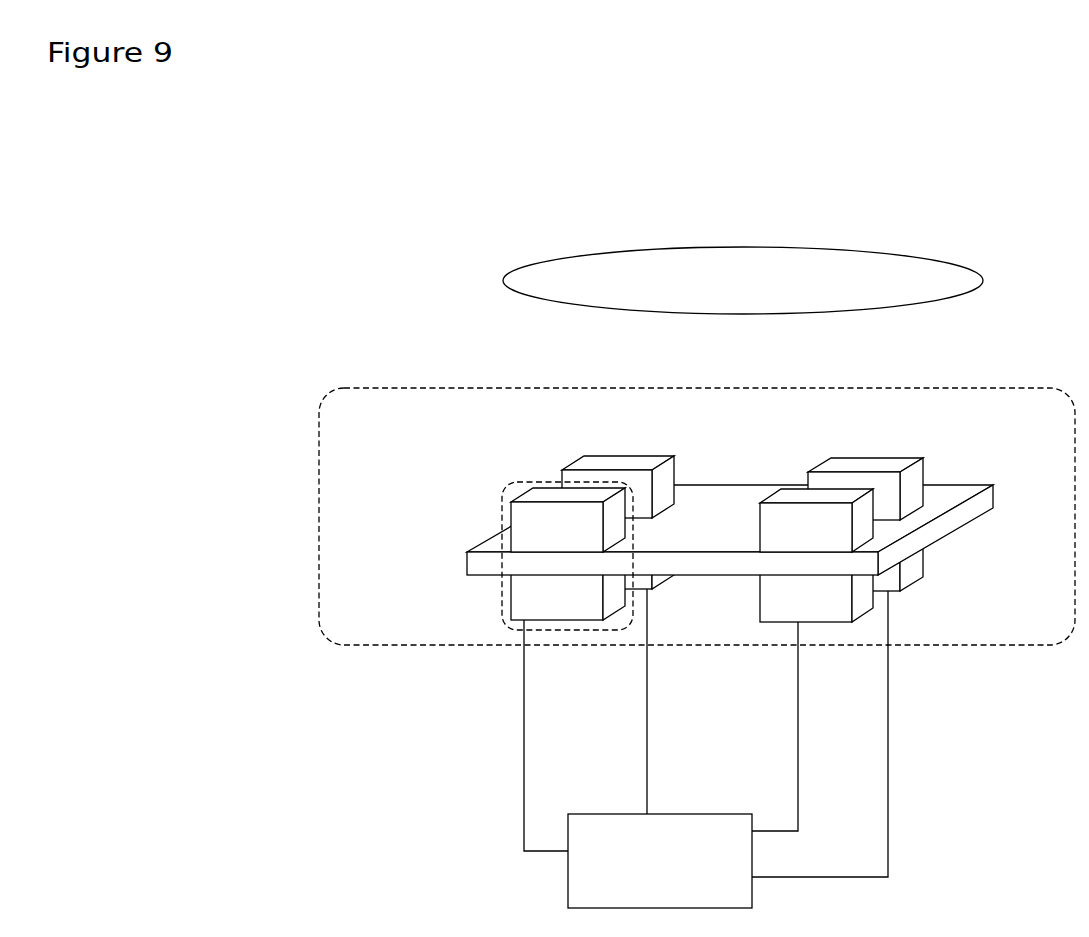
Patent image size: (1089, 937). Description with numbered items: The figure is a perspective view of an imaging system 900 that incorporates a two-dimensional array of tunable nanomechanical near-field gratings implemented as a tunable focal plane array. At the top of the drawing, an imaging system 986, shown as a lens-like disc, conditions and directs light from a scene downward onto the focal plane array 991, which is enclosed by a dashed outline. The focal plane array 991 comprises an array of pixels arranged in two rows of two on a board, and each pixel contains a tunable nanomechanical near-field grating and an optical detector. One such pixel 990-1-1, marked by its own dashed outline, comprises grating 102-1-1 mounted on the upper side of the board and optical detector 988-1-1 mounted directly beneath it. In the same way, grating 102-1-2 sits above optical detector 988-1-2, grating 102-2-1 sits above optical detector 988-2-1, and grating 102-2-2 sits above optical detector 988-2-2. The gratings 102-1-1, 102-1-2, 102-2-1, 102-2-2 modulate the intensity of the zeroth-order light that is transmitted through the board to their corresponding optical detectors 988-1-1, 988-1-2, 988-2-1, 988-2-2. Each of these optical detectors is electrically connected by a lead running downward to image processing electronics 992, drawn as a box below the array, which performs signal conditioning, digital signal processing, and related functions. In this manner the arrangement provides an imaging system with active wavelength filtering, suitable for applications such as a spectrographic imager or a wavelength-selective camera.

The imaging system 900 is at (398, 258).
The imaging system 986 is at (757, 296).
The focal plane array 991 is at (962, 648).
The image processing electronics 992 is at (670, 876).
The pixel 990-1-1 is at (503, 503).
The grating 102-1-1 is at (598, 541).
The grating 102-1-2 is at (848, 542).
The grating 102-2-1 is at (641, 458).
The grating 102-2-2 is at (867, 462).
The optical detector 988-1-1 is at (598, 614).
The optical detector 988-1-2 is at (848, 616).
The optical detector 988-2-1 is at (647, 592).
The optical detector 988-2-2 is at (908, 584).